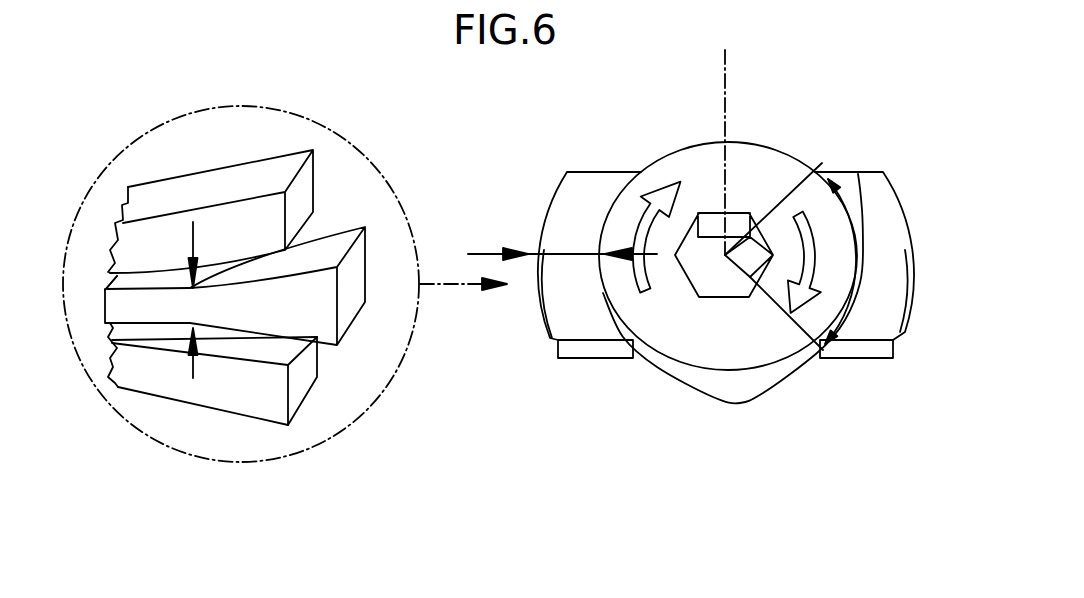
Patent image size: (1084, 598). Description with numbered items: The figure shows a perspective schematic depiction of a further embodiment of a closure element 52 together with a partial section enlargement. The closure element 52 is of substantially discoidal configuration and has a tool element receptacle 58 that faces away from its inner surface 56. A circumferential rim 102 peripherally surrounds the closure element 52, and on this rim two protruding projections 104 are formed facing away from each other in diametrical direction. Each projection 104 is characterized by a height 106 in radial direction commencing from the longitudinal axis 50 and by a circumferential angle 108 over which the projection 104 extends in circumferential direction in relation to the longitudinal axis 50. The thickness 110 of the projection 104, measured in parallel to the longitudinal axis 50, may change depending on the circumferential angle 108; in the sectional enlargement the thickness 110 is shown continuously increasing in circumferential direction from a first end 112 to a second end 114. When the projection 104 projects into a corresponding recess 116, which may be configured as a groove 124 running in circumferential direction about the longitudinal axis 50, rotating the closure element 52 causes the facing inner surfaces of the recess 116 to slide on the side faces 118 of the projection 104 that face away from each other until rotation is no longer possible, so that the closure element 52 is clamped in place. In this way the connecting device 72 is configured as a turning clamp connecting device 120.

The longitudinal axis 50 is at (723, 77).
The closure element 52 is at (758, 128).
The inner surface 56 is at (776, 342).
The tool element receptacle 58 is at (717, 282).
The connecting device 72 is at (98, 240).
The circumferential rim 102 is at (685, 380).
The projection 104 is at (595, 327).
The height 106 is at (565, 254).
The circumferential angle 108 is at (845, 210).
The thickness 110 is at (190, 303).
The first end 112 is at (107, 310).
The second end 114 is at (357, 250).
The recess 116 is at (168, 345).
The side faces 118 is at (333, 243).
The turning clamp connecting device 120 is at (343, 360).
The groove 124 is at (178, 266).